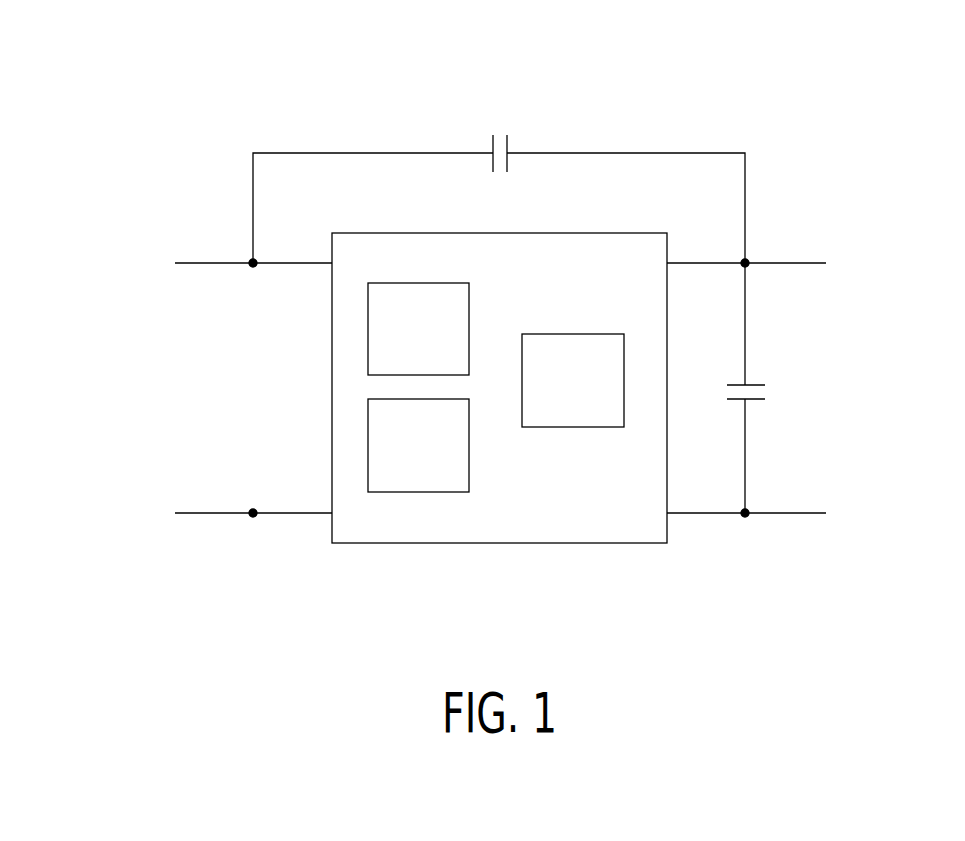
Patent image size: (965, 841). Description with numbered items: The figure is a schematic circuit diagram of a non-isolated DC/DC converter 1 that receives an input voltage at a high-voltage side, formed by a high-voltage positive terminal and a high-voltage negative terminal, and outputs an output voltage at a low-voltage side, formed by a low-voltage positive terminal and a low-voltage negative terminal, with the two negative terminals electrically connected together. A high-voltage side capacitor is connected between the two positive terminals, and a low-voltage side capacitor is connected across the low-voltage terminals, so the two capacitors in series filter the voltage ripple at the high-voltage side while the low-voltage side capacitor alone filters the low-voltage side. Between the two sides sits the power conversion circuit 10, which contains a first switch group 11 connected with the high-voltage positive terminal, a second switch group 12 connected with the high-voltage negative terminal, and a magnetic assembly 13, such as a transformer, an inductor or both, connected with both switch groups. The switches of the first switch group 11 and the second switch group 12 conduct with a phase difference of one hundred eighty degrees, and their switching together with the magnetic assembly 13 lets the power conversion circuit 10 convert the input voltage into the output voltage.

The DC/DC converter 1 is at (933, 73).
The power conversion circuit 10 is at (580, 233).
The first switch group 11 is at (443, 282).
The second switch group 12 is at (469, 473).
The magnetic assembly 13 is at (573, 334).